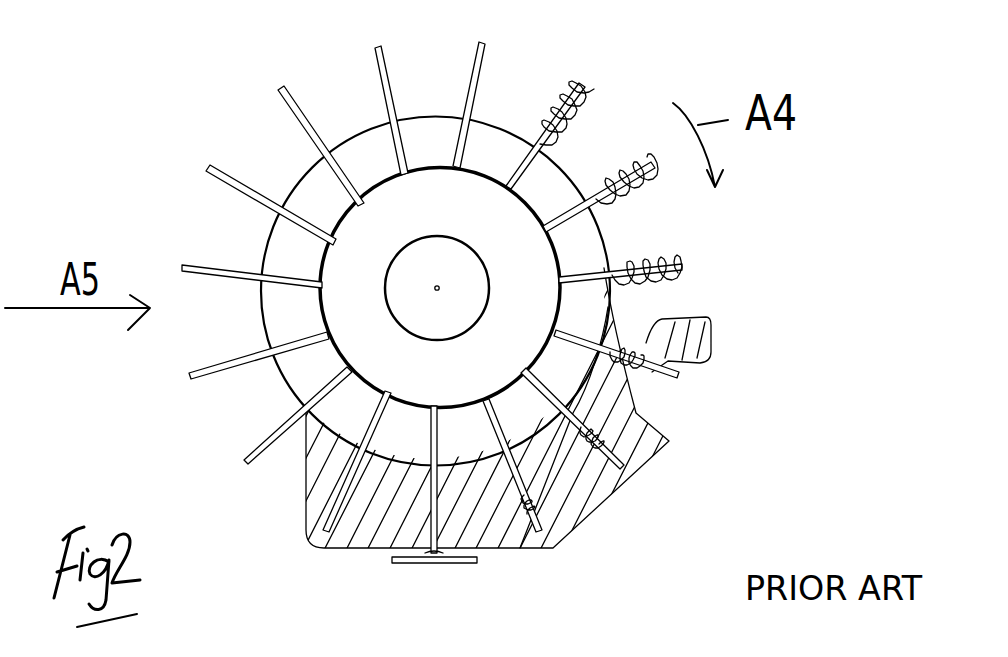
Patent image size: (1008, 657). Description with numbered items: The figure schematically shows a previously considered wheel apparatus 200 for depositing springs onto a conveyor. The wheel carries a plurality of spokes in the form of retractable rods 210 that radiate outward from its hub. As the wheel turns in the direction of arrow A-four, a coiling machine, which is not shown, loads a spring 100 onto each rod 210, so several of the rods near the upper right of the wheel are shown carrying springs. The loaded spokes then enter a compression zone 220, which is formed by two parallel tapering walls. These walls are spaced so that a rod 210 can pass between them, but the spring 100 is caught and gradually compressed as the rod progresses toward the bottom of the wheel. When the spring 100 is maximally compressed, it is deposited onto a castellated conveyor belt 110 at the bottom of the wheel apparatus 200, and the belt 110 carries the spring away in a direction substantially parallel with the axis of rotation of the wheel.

The wheel apparatus 200 is at (178, 129).
The retractable rods 210 is at (473, 65).
The spring 100 is at (555, 100).
The castellated conveyor belt 110 is at (450, 565).
The compression zone 220 is at (593, 497).